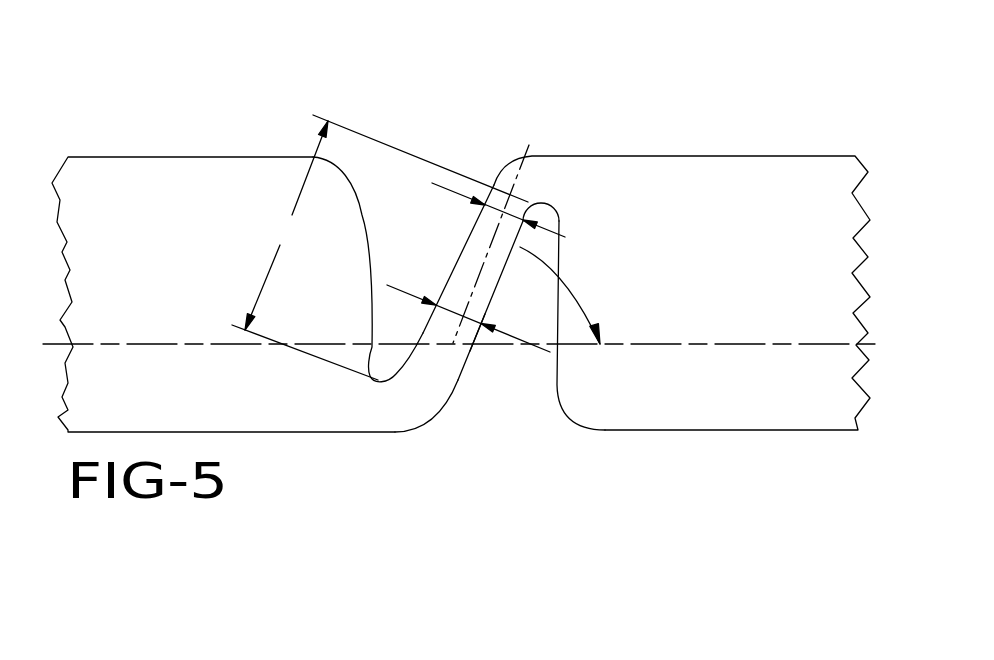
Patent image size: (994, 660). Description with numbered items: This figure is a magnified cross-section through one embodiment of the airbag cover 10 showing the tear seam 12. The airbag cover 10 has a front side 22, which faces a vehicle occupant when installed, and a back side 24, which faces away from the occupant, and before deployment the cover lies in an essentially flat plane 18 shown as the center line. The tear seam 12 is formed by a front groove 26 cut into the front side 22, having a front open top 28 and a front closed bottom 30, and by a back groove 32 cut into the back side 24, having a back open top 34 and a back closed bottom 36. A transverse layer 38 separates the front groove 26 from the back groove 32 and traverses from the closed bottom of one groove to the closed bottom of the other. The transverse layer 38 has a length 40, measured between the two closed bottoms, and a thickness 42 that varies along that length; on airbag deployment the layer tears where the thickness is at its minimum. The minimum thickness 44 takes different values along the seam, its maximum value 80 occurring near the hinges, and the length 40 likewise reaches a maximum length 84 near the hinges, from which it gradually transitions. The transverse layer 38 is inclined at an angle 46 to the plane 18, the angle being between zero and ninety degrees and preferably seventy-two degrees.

The airbag cover 10 is at (243, 140).
The tear seam 12 is at (412, 138).
The plane 18 is at (772, 344).
The front side 22 is at (143, 157).
The back side 24 is at (767, 430).
The front groove 26 is at (410, 208).
The front open top 28 is at (462, 157).
The front closed bottom 30 is at (370, 388).
The back groove 32 is at (535, 382).
The back open top 34 is at (455, 425).
The back closed bottom 36 is at (555, 210).
The transverse layer 38 is at (488, 280).
The length 40 is at (380, 247).
The thickness 42 is at (473, 327).
The minimum thickness 44 is at (476, 220).
The angle 46 is at (575, 287).
The maximum value 80 is at (494, 185).
The maximum length 84 is at (380, 247).